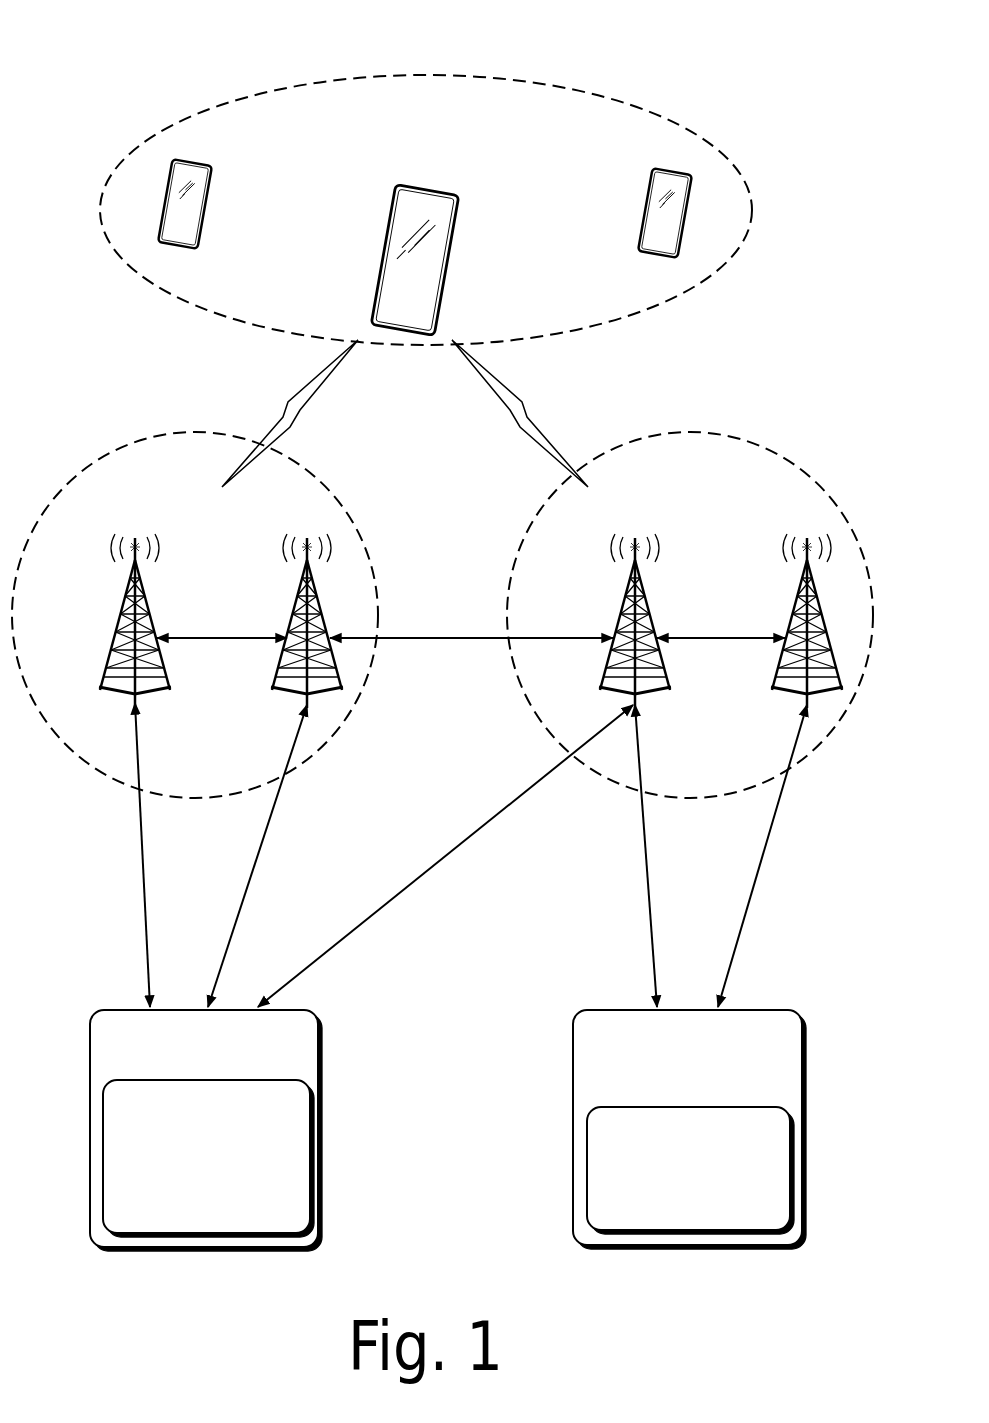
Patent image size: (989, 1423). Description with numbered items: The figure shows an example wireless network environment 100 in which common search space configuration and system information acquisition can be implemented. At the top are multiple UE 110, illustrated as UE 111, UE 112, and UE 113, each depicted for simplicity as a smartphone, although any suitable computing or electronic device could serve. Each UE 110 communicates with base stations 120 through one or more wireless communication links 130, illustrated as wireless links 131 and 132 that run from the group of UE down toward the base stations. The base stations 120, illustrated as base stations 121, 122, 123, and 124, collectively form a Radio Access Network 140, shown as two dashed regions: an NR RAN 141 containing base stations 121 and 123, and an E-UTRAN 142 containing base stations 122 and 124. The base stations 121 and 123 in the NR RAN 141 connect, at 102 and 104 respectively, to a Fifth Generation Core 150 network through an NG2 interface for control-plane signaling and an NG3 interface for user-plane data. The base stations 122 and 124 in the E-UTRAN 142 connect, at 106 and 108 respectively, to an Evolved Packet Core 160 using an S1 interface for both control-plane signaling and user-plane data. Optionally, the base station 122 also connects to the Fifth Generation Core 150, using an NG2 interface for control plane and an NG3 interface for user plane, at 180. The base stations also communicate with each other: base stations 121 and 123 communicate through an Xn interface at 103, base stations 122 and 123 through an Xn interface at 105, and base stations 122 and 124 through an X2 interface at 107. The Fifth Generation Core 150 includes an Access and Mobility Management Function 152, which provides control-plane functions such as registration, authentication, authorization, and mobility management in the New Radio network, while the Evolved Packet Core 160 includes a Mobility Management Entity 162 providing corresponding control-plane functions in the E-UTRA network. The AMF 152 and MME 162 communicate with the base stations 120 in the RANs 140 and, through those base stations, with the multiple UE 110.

The environment 100 is at (130, 42).
The UE 110 is at (672, 116).
The UE 111 is at (465, 184).
The UE 112 is at (218, 160).
The UE 113 is at (648, 170).
The base stations 120 is at (192, 506).
The base station 121 is at (118, 600).
The base station 122 is at (617, 600).
The base station 123 is at (290, 600).
The base station 124 is at (788, 600).
The wireless communication links 130 is at (530, 370).
The wireless link 131 is at (285, 413).
The wireless link 132 is at (546, 410).
The Radio Access Network 140 is at (442, 447).
The NR RAN 141 is at (348, 491).
The E-UTRAN 142 is at (545, 491).
The connection 102 is at (147, 850).
The Xn interface 103 is at (245, 643).
The connection 104 is at (264, 847).
The Xn interface 105 is at (480, 643).
The connection 106 is at (643, 850).
The X2 interface 107 is at (752, 643).
The connection 108 is at (757, 848).
The connection 180 is at (424, 883).
The Fifth Generation Core 150 is at (206, 1130).
The Access and Mobility Management Function 152 is at (208, 1158).
The Evolved Packet Core 160 is at (689, 1129).
The Mobility Management Entity 162 is at (690, 1170).